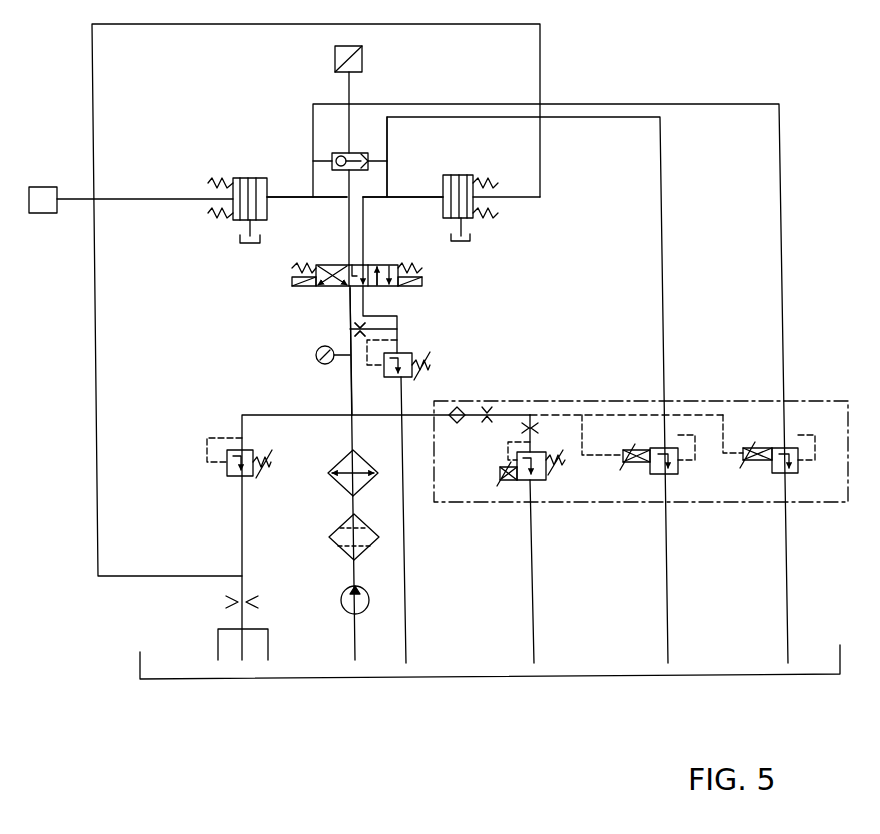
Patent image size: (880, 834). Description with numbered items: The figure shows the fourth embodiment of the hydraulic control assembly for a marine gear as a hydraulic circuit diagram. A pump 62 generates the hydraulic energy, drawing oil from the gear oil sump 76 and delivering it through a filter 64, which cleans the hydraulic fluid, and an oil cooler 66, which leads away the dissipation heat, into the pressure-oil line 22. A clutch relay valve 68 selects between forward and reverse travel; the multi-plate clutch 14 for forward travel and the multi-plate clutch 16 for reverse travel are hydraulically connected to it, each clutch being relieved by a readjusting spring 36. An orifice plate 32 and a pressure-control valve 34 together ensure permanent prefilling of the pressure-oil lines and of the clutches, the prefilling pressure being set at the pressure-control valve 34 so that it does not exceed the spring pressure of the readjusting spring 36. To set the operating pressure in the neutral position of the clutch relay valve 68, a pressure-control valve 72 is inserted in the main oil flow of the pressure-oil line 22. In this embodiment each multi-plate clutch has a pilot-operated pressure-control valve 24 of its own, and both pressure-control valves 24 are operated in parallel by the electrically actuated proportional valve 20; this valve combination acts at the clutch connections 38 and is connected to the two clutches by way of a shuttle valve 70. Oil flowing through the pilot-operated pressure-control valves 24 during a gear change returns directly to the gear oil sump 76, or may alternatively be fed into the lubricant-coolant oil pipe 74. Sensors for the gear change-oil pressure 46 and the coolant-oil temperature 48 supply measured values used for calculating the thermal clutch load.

The multi-plate clutch 14 is at (456, 172).
The multi-plate clutch 16 is at (243, 170).
The proportional valve 20 is at (512, 494).
The pressure-oil line 22 is at (349, 393).
The pilot-operated pressure-control valve 24 is at (640, 480).
The orifice plate 32 is at (352, 317).
The pressure-control valve 34 is at (412, 351).
The readjusting spring 36 is at (498, 213).
The clutch connections 38 is at (318, 207).
The gear change-oil pressure sensor 46 is at (364, 60).
The coolant-oil temperature sensor 48 is at (47, 187).
The pump 62 is at (342, 607).
The filter 64 is at (336, 544).
The oil cooler 66 is at (340, 486).
The clutch relay valve 68 is at (381, 256).
The shuttle valve 70 is at (339, 151).
The pressure-control valve 72 is at (218, 482).
The lubricant-coolant oil pipe 74 is at (240, 580).
The gear oil sump 76 is at (432, 680).